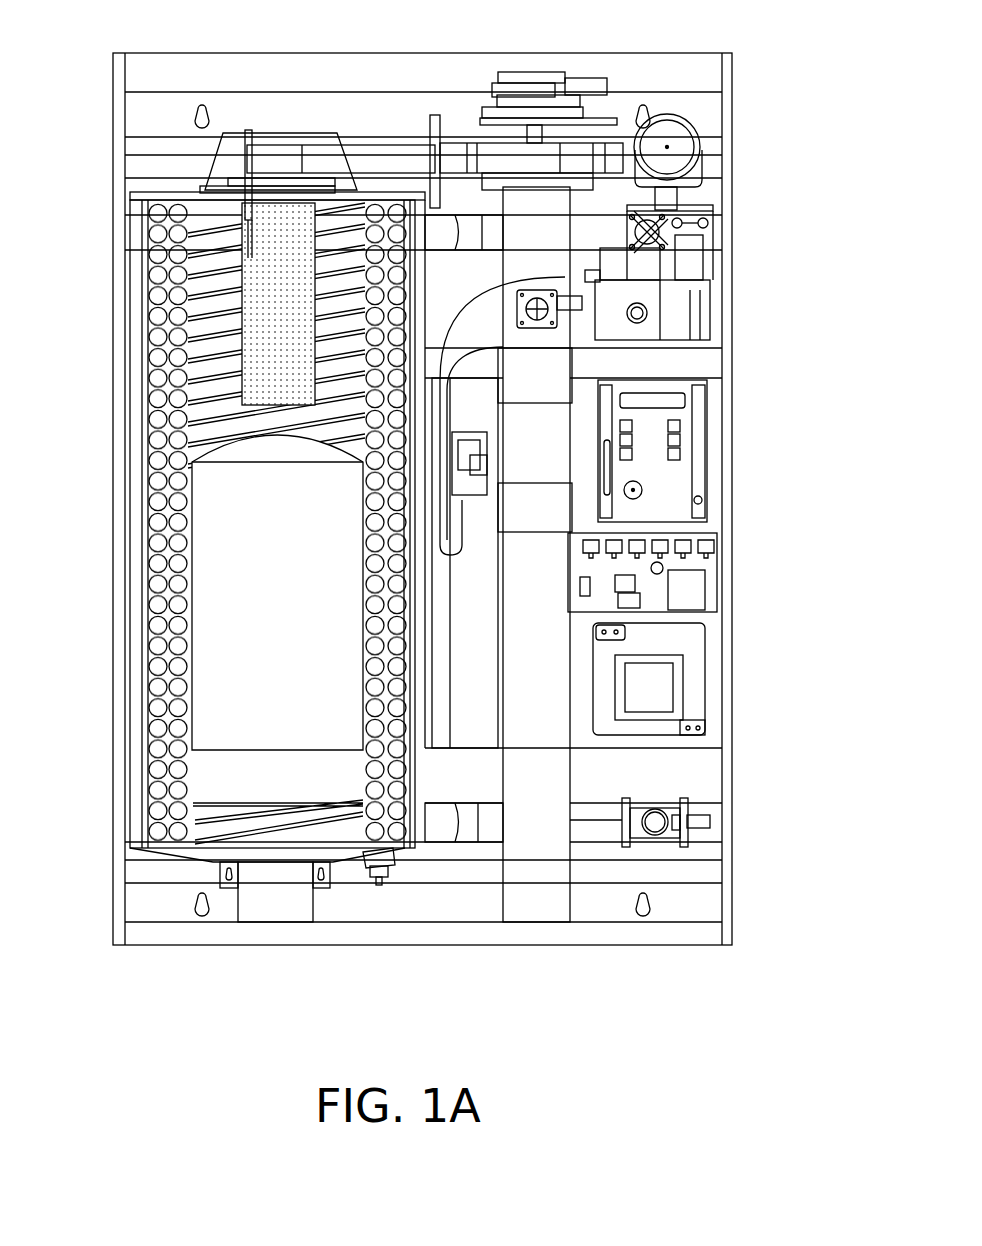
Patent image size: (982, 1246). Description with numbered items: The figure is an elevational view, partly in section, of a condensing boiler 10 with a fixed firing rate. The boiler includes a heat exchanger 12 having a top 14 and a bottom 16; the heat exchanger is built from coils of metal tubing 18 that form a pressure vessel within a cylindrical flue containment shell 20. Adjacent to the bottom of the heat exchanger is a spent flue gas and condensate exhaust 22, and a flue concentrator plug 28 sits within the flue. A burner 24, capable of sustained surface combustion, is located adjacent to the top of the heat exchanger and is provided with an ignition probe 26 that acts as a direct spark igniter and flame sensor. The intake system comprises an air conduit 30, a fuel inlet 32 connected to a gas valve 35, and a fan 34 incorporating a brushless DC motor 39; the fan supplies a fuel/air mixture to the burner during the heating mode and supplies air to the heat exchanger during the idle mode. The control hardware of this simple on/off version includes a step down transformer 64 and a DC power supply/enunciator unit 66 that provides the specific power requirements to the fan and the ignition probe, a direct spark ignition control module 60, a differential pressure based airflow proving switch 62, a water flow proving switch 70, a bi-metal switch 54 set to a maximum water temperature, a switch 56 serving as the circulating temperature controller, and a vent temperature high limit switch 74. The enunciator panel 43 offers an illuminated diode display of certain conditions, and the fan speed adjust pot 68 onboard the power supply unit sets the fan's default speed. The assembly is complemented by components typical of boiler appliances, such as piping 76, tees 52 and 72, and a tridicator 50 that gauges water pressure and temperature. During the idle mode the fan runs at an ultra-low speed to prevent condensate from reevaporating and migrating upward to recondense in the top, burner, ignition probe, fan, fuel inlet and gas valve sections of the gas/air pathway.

The condensing boiler 10 is at (795, 400).
The heat exchanger 12 is at (160, 478).
The top 14 is at (148, 212).
The bottom 16 is at (200, 868).
The coils of metal tubing 18 is at (148, 760).
The flue containment shell 20 is at (125, 380).
The spent flue gas and condensate exhaust 22 is at (268, 885).
The burner 24 is at (260, 285).
The ignition probe 26 is at (240, 165).
The flue concentrator plug 28 is at (255, 590).
The air conduit 30 is at (550, 505).
The fuel inlet 32 is at (553, 318).
The fan 34 is at (530, 155).
The gas valve 35 is at (650, 298).
The brushless DC motor 39 is at (535, 78).
The enunciator panel 43 is at (722, 568).
The tridicator 50 is at (680, 140).
The tee 52 is at (705, 205).
The bi-metal switch 54 is at (660, 225).
The circulating temperature controller switch 56 is at (690, 262).
The direct spark ignition control module 60 is at (665, 435).
The differential pressure based airflow proving switch 62 is at (487, 463).
The step down transformer 64 is at (657, 682).
The DC power supply/enunciator unit 66 is at (660, 575).
The fan speed adjust pot 68 is at (630, 585).
The water flow proving switch 70 is at (658, 825).
The tee 72 is at (695, 800).
The vent temperature high limit switch 74 is at (380, 882).
The piping 76 is at (590, 830).